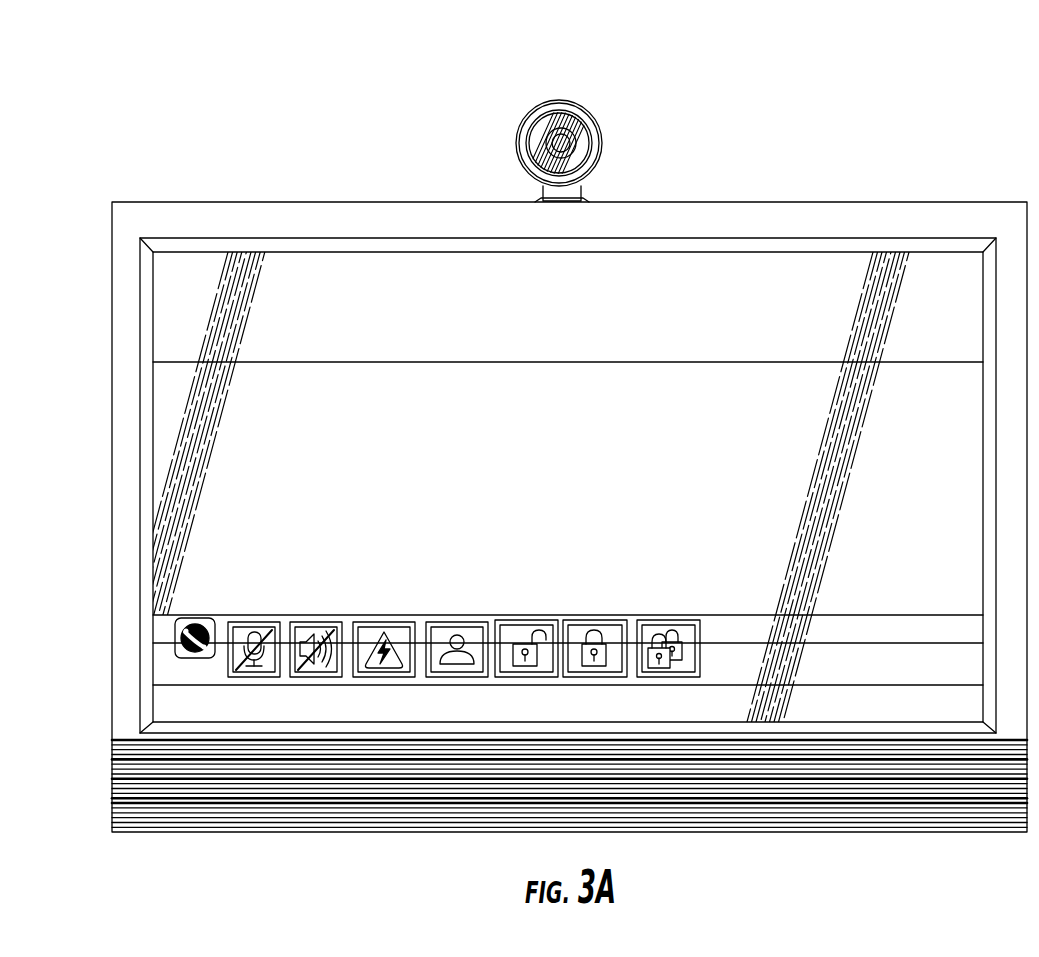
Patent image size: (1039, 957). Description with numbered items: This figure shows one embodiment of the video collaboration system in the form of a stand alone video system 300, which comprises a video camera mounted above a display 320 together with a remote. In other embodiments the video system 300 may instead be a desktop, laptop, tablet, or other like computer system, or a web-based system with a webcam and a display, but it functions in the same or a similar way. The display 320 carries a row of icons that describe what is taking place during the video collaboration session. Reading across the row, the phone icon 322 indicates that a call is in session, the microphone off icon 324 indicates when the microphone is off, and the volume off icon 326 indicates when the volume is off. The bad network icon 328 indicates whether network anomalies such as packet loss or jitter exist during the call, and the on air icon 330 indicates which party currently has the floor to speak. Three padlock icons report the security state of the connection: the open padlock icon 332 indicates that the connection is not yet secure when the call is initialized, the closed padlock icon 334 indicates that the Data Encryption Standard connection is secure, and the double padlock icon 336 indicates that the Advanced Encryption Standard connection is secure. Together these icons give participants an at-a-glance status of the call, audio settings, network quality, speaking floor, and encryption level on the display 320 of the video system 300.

The stand alone video system 300 is at (611, 78).
The display 320 is at (330, 210).
The phone icon 322 is at (205, 655).
The microphone off icon 324 is at (268, 664).
The volume off icon 326 is at (310, 632).
The bad network icon 328 is at (402, 633).
The on air icon 330 is at (474, 635).
The open padlock icon 332 is at (523, 633).
The closed padlock icon 334 is at (610, 637).
The double padlock icon 336 is at (675, 633).